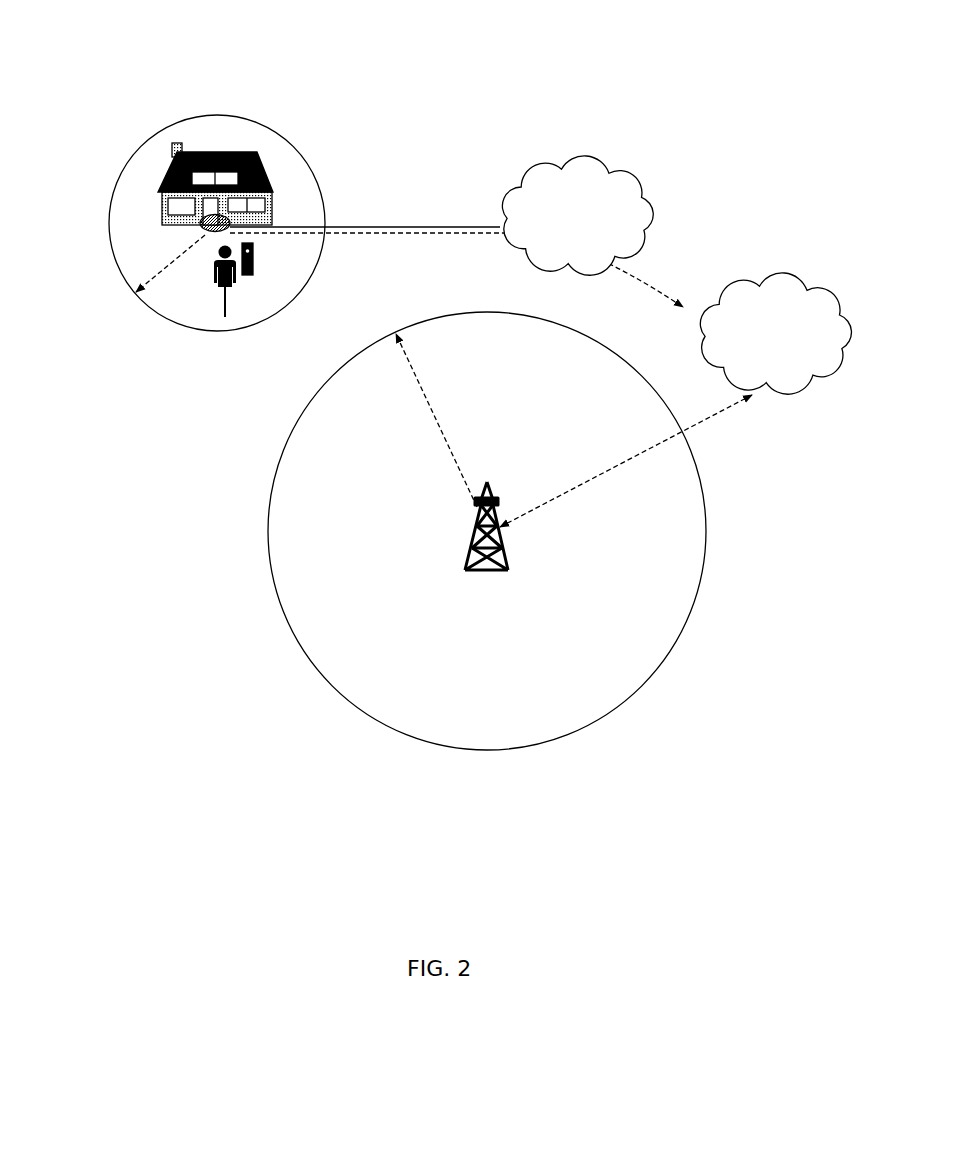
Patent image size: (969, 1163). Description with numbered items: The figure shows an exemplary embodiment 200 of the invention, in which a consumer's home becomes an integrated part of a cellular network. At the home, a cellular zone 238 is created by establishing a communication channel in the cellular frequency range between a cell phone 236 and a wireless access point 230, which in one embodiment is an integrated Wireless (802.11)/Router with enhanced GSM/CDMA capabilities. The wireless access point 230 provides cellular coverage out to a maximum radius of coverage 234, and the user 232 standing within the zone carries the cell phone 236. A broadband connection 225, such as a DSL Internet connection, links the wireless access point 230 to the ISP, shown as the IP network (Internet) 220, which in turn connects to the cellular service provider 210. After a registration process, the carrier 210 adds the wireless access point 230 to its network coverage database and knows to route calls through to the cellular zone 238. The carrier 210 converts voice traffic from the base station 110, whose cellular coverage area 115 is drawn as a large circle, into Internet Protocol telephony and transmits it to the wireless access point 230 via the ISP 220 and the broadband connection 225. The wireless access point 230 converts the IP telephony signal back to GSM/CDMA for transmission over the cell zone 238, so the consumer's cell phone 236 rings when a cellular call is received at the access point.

The exemplary embodiment 200 is at (682, 114).
The cellular zone 238 is at (136, 190).
The wireless access point 230 is at (203, 229).
The user 232 is at (222, 318).
The cell phone 236 is at (247, 277).
The maximum radius of coverage 234 is at (158, 277).
The broadband connection 225 is at (382, 222).
The IP network (Internet) / ISP 220 is at (567, 183).
The cellular service provider 210 is at (777, 297).
The base station 110 is at (470, 553).
The cellular coverage area 115 is at (607, 637).